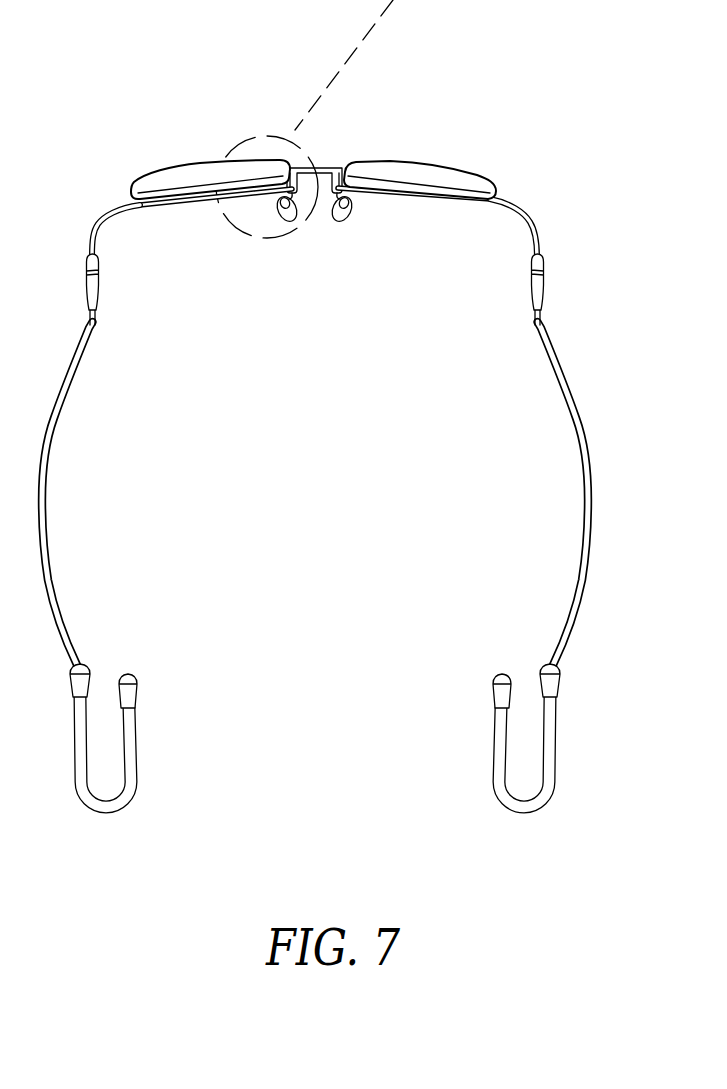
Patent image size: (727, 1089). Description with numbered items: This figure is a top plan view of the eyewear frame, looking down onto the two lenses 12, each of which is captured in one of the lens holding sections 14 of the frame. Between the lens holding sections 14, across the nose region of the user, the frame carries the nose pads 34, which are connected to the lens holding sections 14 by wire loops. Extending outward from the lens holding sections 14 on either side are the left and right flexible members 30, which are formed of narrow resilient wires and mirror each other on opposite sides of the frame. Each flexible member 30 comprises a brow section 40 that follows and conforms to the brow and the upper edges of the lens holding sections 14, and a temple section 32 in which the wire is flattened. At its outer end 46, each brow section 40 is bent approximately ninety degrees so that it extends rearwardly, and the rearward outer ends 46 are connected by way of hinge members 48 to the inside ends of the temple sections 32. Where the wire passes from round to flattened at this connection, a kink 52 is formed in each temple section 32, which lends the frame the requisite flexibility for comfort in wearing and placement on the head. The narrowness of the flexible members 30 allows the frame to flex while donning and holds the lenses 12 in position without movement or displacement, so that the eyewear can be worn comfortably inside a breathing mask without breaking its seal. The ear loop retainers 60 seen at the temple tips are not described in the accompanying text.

The lenses 12 is at (195, 167).
The lens holding sections 14 is at (150, 178).
The flexible members 30 is at (53, 437).
The temple sections 32 is at (572, 403).
The nose pads 34 is at (296, 213).
The brow sections 40 is at (194, 193).
The outer ends 46 is at (104, 223).
The hinge members 48 is at (99, 298).
The kink 52 is at (92, 333).
The ear loop retainer 60 is at (140, 750).